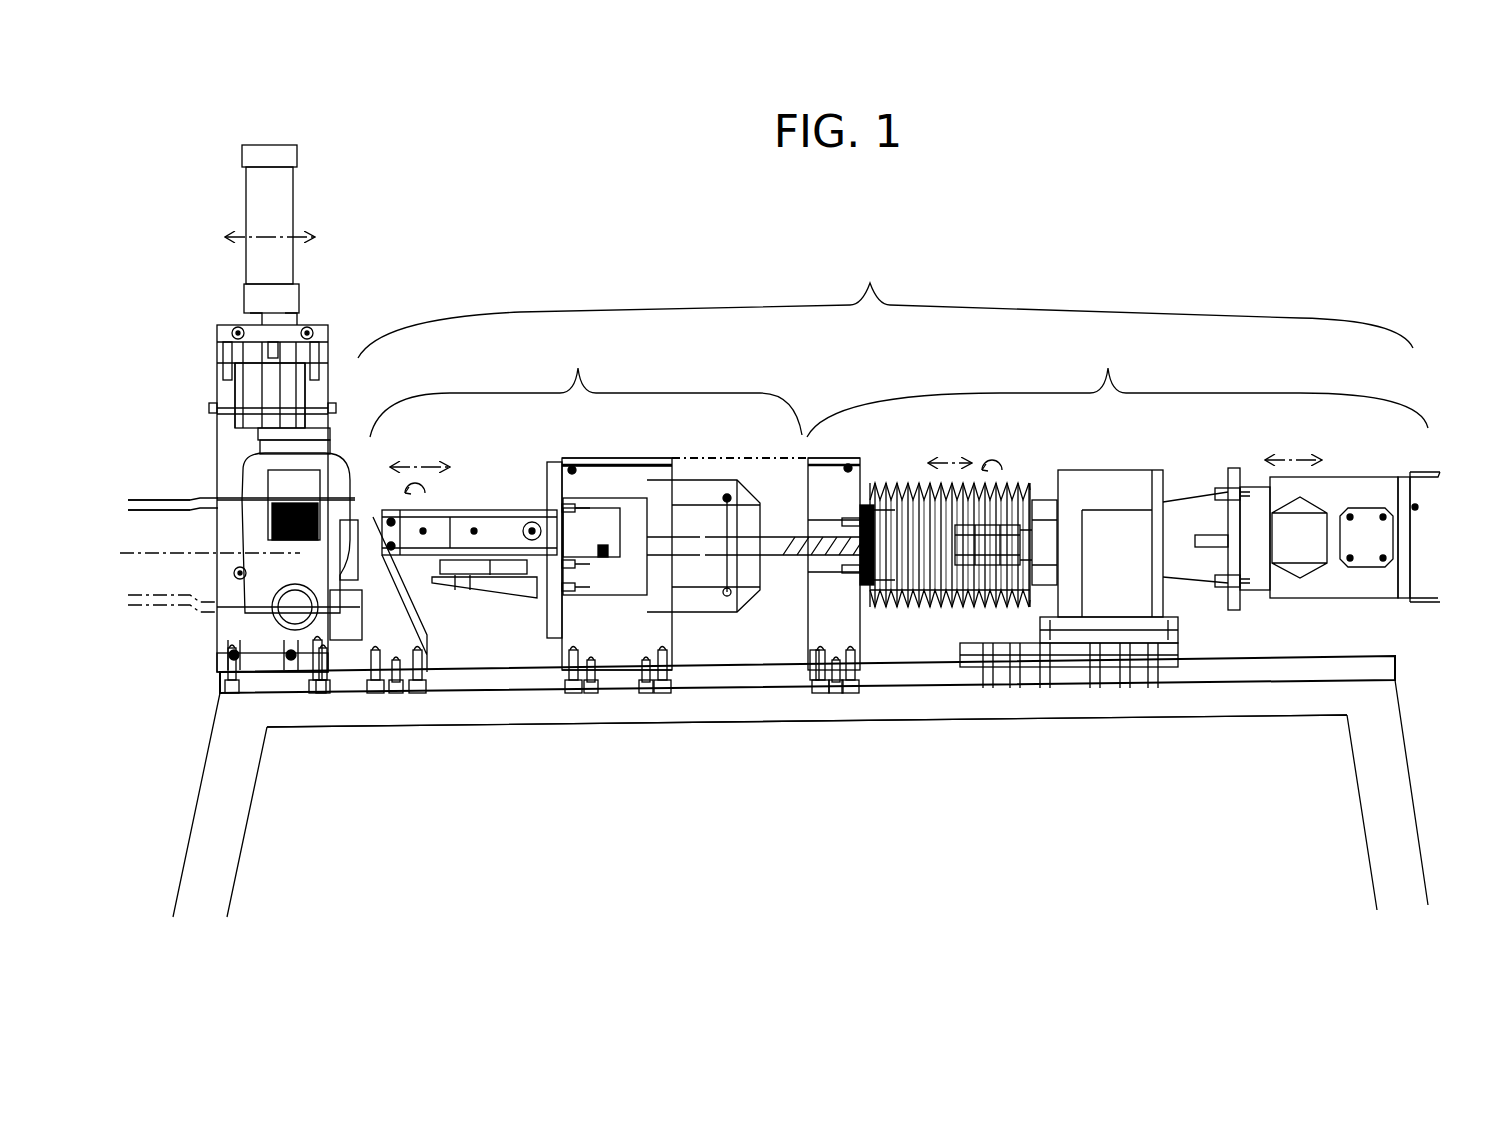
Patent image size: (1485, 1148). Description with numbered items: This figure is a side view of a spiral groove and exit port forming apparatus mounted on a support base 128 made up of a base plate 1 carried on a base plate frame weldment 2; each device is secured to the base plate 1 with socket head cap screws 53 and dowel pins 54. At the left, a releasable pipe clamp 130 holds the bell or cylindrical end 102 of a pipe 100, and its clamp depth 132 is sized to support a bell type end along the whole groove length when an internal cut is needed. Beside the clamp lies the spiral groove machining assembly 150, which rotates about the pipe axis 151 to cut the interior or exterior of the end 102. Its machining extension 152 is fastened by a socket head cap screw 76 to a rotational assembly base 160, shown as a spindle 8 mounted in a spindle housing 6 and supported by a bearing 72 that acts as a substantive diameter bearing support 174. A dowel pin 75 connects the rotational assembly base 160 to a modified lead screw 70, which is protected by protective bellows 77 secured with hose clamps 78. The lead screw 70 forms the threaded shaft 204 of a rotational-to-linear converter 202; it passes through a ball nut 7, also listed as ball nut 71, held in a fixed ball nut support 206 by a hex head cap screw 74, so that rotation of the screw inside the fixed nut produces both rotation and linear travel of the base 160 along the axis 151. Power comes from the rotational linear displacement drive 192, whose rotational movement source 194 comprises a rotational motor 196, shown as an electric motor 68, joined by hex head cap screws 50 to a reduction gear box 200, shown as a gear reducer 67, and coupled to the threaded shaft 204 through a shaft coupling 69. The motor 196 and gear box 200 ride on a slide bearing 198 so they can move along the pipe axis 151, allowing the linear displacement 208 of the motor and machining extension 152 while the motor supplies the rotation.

The base plate 1 is at (1212, 690).
The base plate frame weldment 2 is at (1387, 710).
The spindle housing 6 is at (627, 452).
The ball nut 7 is at (836, 450).
The spindle 8 is at (691, 622).
The hex head cap screws 50 is at (1218, 480).
The socket head cap screws 53 is at (325, 697).
The dowel pins 54 is at (305, 698).
The gear reducer 67 is at (1121, 466).
The electric motor 68 is at (1366, 472).
The shaft coupling 69 is at (975, 483).
The modified lead screw 70 is at (880, 520).
The ball nut 71 is at (889, 566).
The bearing 72 is at (597, 476).
The hex head cap screw 74 is at (912, 595).
The dowel pin 75 is at (727, 494).
The socket head cap screw 76 is at (543, 505).
The protective bellows 77 is at (1013, 472).
The hose clamps 78 is at (1040, 486).
The pipe 100 is at (153, 500).
The end 102 is at (210, 486).
The support base 128 is at (1030, 720).
The releasable pipe clamp 130 is at (326, 323).
The clamp depth 132 is at (262, 237).
The spiral groove machining assembly 150 is at (885, 304).
The pipe axis 151 is at (170, 553).
The machining extension 152 is at (586, 386).
The rotational assembly base 160 is at (540, 622).
The substantive diameter bearing support 174 is at (543, 457).
The rotational linear displacement drive 192 is at (1117, 471).
The rotational movement source 194 is at (1327, 630).
The rotational motor 196 is at (1352, 600).
The slide bearing 198 is at (953, 657).
The reduction gear box 200 is at (1168, 600).
The rotational-to-linear converter 202 is at (814, 697).
The threaded shaft 204 is at (803, 556).
The ball nut support 206 is at (826, 455).
The linear displacement 208 is at (963, 522).